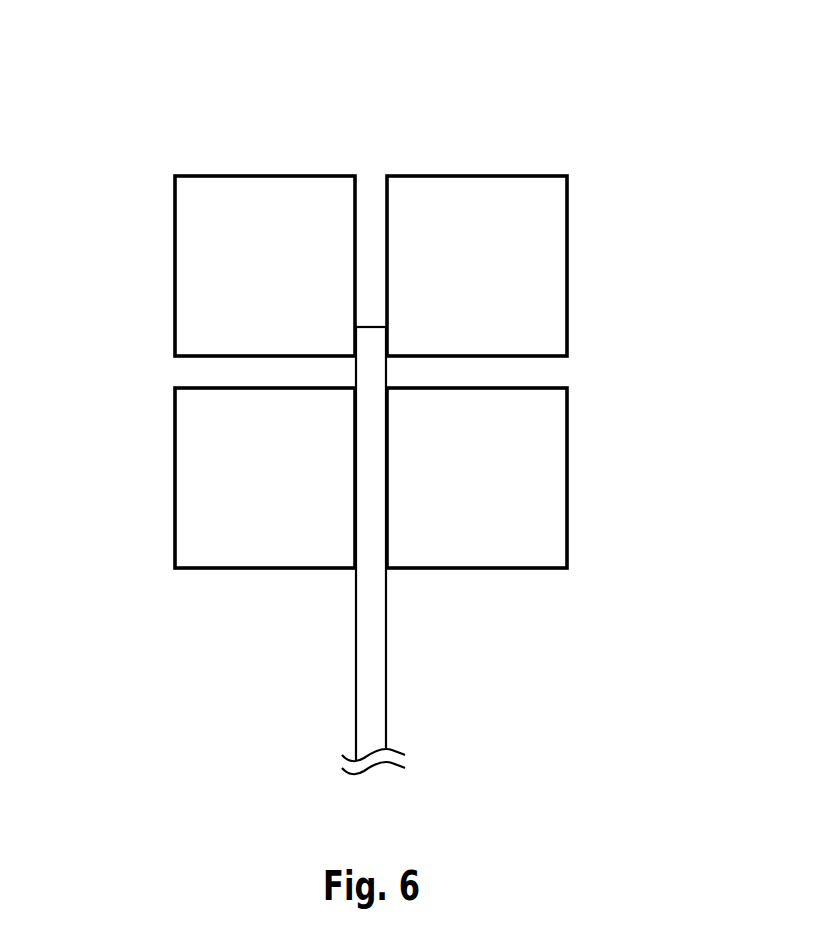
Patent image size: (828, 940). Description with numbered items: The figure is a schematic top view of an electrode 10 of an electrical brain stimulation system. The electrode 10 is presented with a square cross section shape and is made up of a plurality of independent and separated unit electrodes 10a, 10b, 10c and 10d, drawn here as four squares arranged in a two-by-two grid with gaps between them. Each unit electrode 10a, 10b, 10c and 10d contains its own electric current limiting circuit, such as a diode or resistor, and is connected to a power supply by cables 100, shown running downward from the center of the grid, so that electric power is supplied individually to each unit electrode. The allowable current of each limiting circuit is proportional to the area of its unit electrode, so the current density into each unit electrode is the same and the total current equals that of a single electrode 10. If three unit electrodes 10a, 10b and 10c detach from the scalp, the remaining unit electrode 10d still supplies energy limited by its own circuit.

The electrode 10 is at (442, 129).
The unit electrode 10a is at (173, 262).
The unit electrode 10b is at (173, 473).
The unit electrode 10c is at (569, 479).
The unit electrode 10d is at (569, 267).
The cables 100 is at (387, 672).